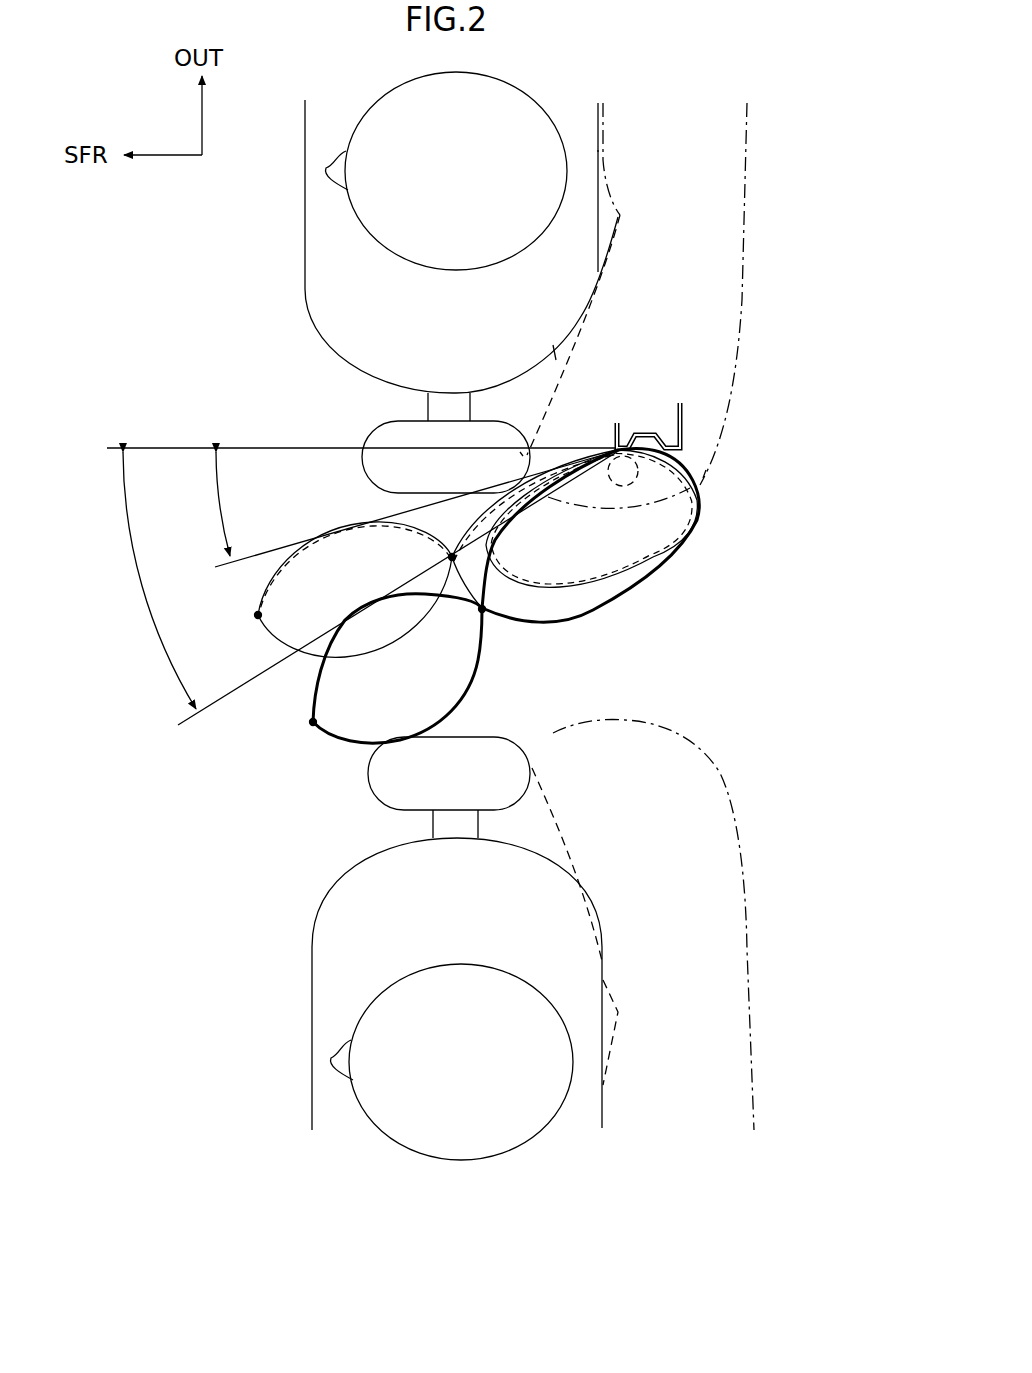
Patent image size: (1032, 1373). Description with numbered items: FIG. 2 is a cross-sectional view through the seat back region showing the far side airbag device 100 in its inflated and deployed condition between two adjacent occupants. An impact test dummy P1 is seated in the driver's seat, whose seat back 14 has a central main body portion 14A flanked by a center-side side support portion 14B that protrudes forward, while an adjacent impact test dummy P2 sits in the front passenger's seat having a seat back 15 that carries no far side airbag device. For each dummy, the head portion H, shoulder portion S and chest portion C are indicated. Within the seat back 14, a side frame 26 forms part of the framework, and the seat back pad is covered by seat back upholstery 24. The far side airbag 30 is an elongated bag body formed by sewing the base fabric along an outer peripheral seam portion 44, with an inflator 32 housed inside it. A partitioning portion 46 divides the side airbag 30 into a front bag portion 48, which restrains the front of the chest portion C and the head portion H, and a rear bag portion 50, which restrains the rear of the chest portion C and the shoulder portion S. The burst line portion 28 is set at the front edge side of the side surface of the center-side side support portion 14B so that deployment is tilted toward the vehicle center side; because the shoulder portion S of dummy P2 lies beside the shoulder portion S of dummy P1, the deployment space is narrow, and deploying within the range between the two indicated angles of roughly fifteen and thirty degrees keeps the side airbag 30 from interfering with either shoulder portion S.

The seat back 14 is at (738, 372).
The main body portion 14A is at (603, 135).
The center-side side support portion 14B is at (555, 362).
The seat back 15 is at (735, 803).
The burst line portion position 100 is at (522, 456).
The side frame 26 is at (678, 408).
The seat back upholstery 24 is at (712, 467).
The burst line portion 28 is at (550, 500).
The inflator 32 is at (622, 486).
The rear bag portion 50 is at (577, 597).
The partitioning portion 46 is at (484, 612).
The front bag portion 48 is at (272, 576).
The outer peripheral seam portion 44 is at (253, 615).
The far side airbag 30 is at (273, 642).
The impact test dummy P1 is at (302, 290).
The impact test dummy P2 is at (309, 1000).
The head portion H is at (513, 89).
The chest portion C is at (305, 205).
The shoulder portion S is at (362, 440).